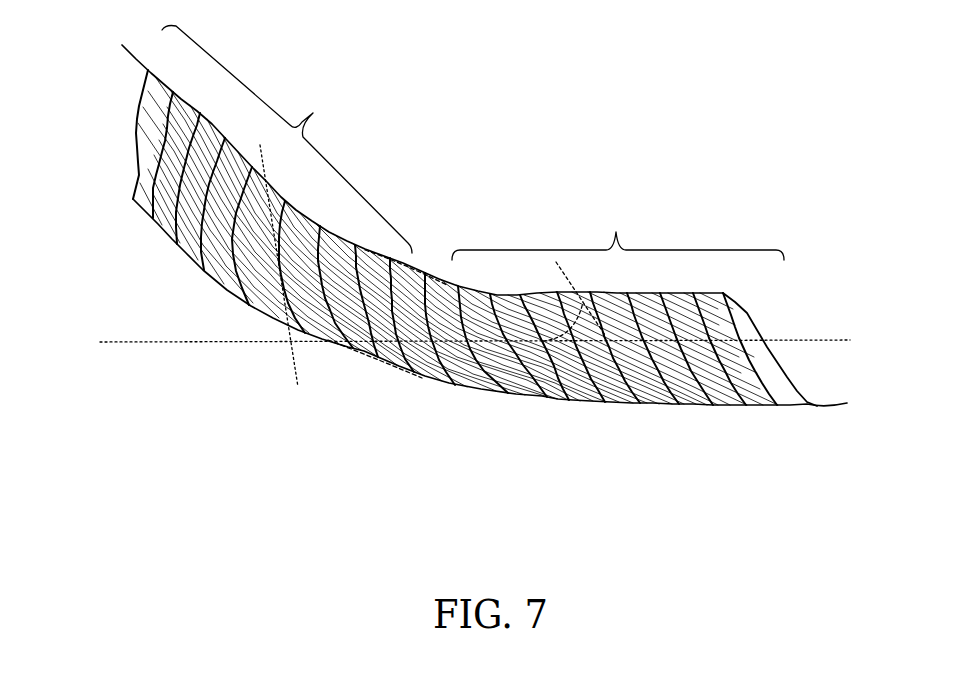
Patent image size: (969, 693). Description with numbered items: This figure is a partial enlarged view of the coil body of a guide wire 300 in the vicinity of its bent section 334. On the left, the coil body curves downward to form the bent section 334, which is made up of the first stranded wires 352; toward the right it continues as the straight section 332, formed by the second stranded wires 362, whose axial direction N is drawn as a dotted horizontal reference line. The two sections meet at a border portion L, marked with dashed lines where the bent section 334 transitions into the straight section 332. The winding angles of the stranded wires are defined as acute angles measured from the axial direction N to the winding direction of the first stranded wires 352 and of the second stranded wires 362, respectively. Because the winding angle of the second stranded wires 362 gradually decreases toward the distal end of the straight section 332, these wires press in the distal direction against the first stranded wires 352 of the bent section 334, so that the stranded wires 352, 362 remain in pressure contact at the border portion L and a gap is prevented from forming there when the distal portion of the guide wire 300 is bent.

The guide wire 300 is at (446, 275).
The straight section 332 is at (618, 220).
The bent section 334 is at (287, 140).
The first stranded wires 352 is at (133, 180).
The second stranded wires 362 is at (672, 425).
The axial direction of the straight section N is at (494, 339).
The border portion L is at (406, 381).